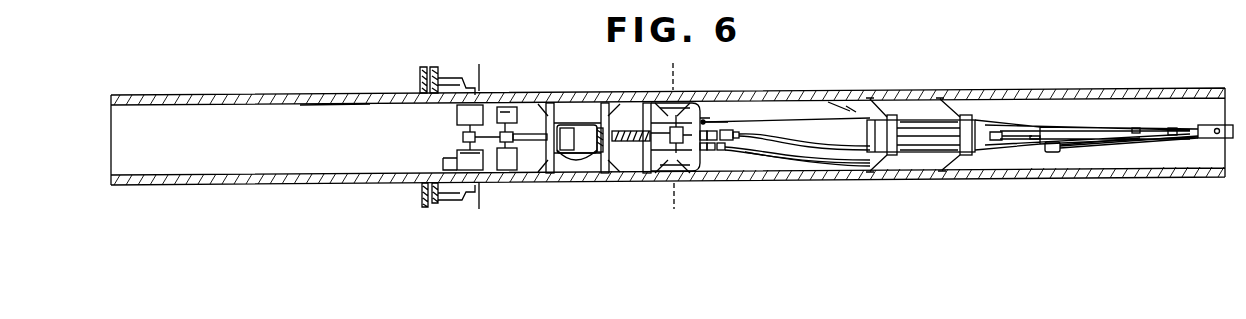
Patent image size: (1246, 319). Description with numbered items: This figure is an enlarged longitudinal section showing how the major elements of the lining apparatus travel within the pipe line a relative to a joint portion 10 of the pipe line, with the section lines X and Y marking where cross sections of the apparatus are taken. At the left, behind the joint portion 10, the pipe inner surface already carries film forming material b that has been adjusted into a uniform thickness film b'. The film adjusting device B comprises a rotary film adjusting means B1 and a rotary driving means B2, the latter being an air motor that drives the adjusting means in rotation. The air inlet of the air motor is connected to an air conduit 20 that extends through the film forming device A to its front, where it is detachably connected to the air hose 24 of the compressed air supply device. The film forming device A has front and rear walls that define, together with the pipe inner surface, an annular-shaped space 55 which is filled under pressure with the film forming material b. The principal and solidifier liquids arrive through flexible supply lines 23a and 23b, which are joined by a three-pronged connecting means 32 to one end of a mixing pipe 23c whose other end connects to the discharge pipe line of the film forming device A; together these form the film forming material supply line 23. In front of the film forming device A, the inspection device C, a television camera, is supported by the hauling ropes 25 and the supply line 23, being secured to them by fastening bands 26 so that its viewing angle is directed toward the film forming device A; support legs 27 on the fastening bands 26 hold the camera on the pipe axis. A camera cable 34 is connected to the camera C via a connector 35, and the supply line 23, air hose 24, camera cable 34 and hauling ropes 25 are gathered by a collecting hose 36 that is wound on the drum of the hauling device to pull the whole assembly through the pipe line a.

The joint portion 10 is at (421, 82).
The air conduit 20 is at (582, 154).
The film forming material supply line 23 is at (1012, 157).
The supply line for principal liquid 23a is at (1100, 147).
The supply line for solidifier liquid 23b is at (1128, 140).
The mixing pipe 23c is at (758, 141).
The air hose 24 is at (810, 161).
The hauling ropes 25 is at (834, 146).
The fastening bands 26 is at (942, 122).
The support legs 27 is at (955, 101).
The three-pronged connecting means 32 is at (1052, 153).
The camera cable 34 is at (1037, 137).
The connector 35 is at (1005, 126).
The collecting hose 36 is at (1205, 138).
The annular-shaped space 55 is at (664, 102).
The film forming device A is at (690, 105).
The film adjusting device B is at (521, 118).
The rotary film adjusting means B1 is at (452, 185).
The rotary driving means B2 is at (574, 163).
The inspection device C is at (920, 153).
The section line X— X is at (478, 138).
The section line Y— Y is at (672, 137).
The pipe line a is at (334, 186).
The film forming material b is at (674, 154).
The uniform thickness film b' is at (335, 116).